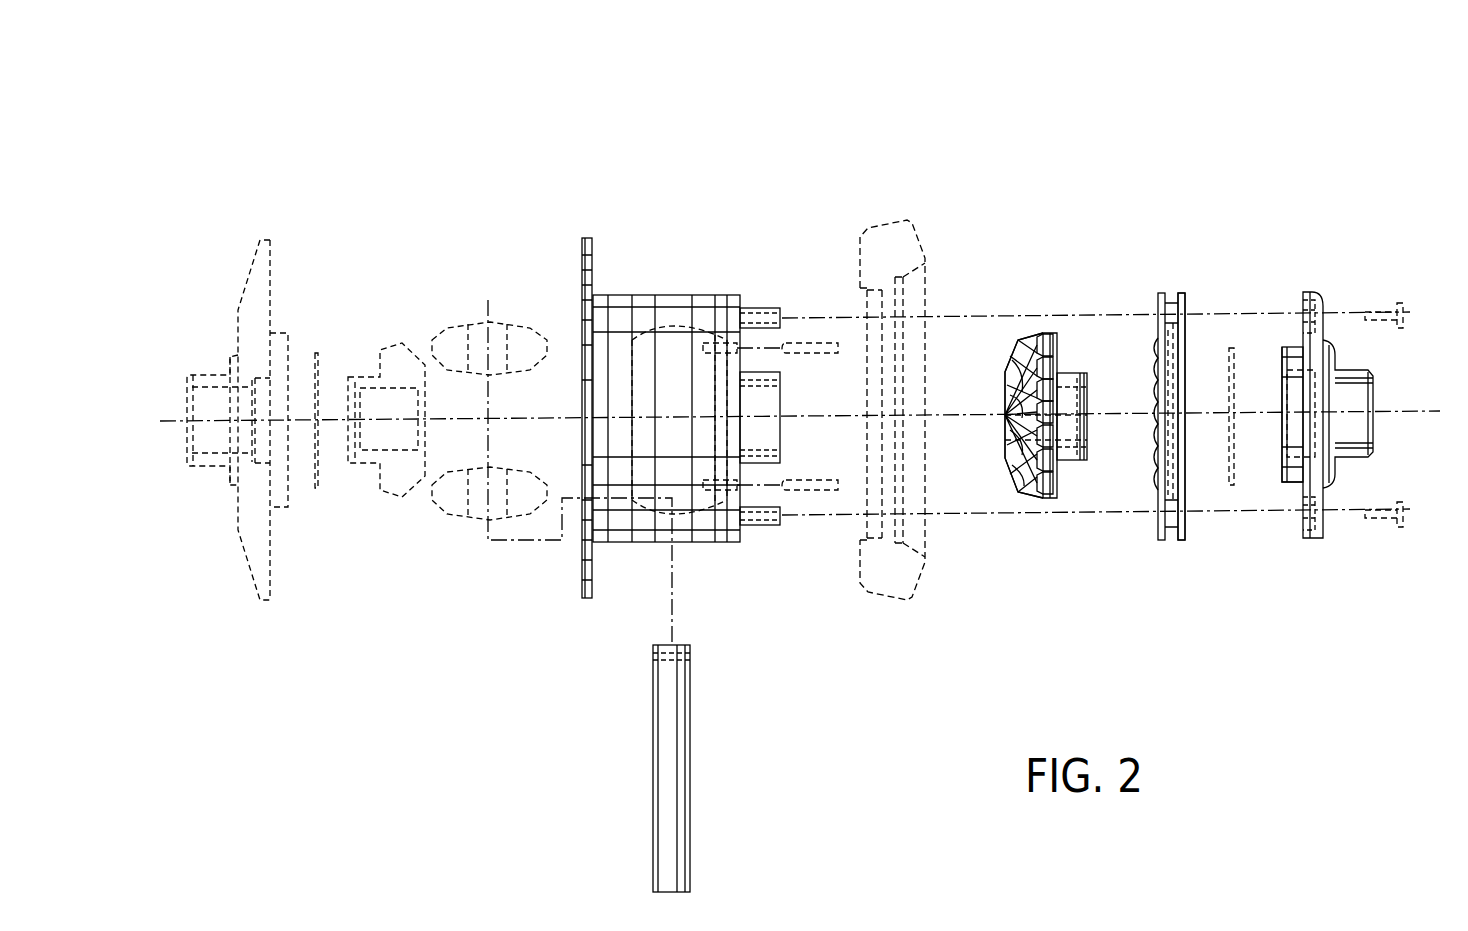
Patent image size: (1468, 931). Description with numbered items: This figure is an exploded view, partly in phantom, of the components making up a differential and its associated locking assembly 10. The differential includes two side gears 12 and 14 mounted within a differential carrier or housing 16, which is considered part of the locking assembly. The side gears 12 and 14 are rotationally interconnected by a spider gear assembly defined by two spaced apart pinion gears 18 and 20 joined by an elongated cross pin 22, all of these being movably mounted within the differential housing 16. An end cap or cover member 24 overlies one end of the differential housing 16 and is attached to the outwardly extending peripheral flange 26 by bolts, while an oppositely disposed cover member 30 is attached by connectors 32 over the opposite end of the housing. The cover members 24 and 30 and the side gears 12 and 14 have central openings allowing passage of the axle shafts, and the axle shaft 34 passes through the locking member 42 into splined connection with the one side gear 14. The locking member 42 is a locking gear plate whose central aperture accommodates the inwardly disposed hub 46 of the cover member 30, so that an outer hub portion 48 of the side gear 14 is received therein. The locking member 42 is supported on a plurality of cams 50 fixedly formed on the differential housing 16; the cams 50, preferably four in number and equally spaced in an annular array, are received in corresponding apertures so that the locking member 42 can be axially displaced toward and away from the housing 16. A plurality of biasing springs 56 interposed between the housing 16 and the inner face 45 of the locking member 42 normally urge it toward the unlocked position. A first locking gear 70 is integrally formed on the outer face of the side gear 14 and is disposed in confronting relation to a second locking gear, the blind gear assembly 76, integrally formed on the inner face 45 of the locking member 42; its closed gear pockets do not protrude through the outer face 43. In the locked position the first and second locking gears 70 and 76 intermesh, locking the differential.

The locking assembly 10 is at (1001, 203).
The side gear 12 is at (376, 342).
The side gear 14 is at (1052, 329).
The differential housing 16 is at (633, 298).
The pinion gear 18 is at (443, 309).
The pinion gear 20 is at (433, 529).
The cross pin 22 is at (653, 705).
The cover member 24 is at (285, 230).
The peripheral flange 26 is at (587, 238).
The cover member 30 is at (1322, 289).
The connectors 32 is at (1400, 302).
The axle shaft 34 is at (880, 220).
The locking member 42 is at (1184, 300).
The outer face 43 is at (1185, 480).
The inner face 45 is at (1160, 522).
The hub 46 is at (1292, 483).
The outer hub portion 48 is at (1058, 458).
The cams 50 is at (756, 307).
The biasing springs 56 is at (808, 343).
The first locking gear 70 is at (1063, 502).
The blind gear assembly 76 is at (1147, 344).